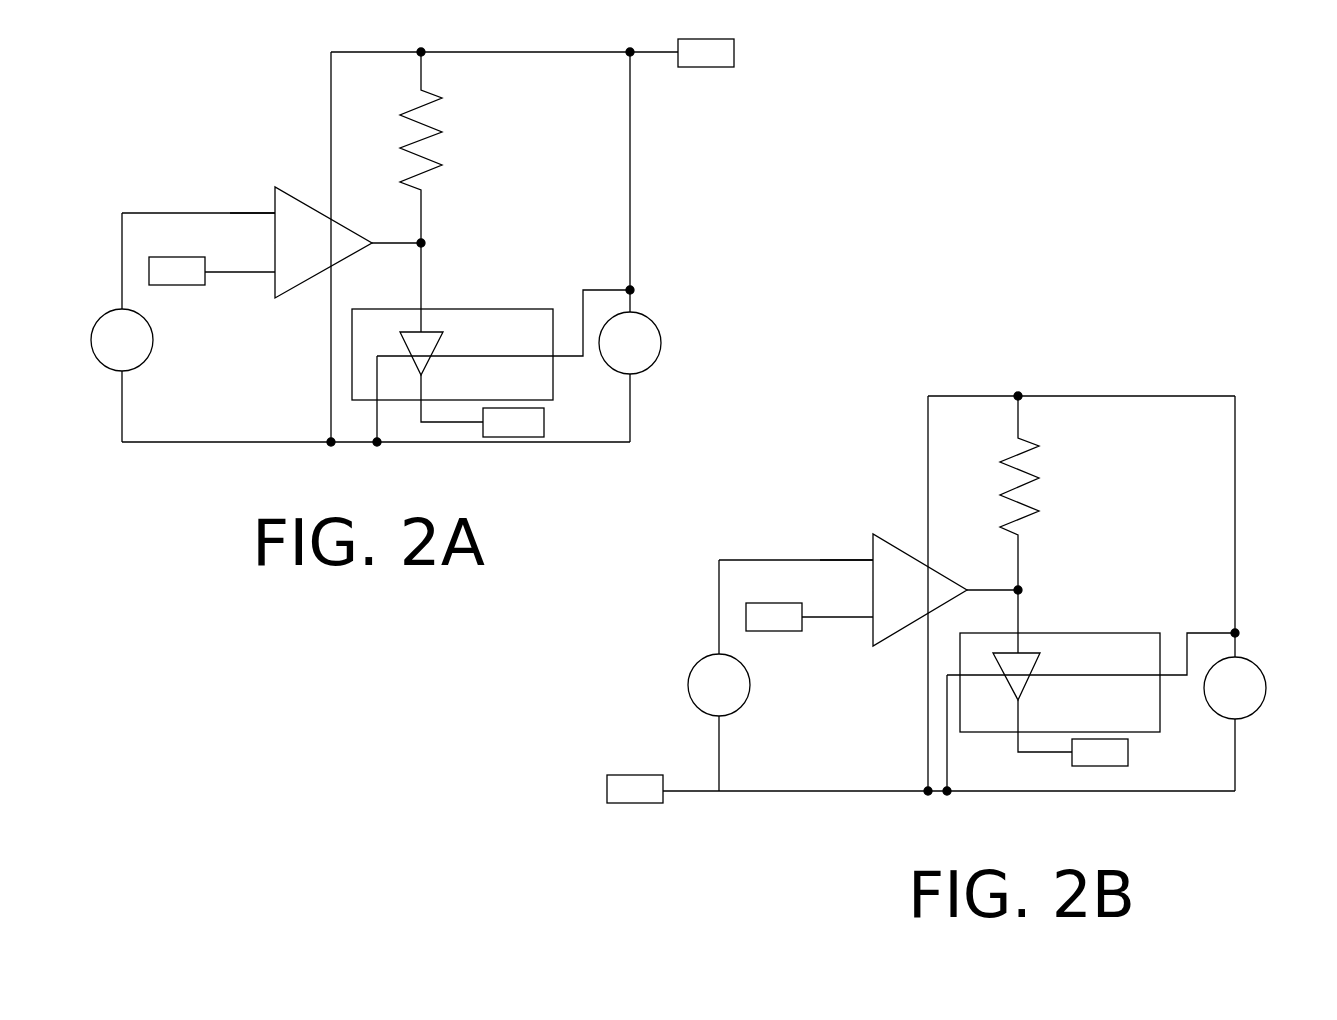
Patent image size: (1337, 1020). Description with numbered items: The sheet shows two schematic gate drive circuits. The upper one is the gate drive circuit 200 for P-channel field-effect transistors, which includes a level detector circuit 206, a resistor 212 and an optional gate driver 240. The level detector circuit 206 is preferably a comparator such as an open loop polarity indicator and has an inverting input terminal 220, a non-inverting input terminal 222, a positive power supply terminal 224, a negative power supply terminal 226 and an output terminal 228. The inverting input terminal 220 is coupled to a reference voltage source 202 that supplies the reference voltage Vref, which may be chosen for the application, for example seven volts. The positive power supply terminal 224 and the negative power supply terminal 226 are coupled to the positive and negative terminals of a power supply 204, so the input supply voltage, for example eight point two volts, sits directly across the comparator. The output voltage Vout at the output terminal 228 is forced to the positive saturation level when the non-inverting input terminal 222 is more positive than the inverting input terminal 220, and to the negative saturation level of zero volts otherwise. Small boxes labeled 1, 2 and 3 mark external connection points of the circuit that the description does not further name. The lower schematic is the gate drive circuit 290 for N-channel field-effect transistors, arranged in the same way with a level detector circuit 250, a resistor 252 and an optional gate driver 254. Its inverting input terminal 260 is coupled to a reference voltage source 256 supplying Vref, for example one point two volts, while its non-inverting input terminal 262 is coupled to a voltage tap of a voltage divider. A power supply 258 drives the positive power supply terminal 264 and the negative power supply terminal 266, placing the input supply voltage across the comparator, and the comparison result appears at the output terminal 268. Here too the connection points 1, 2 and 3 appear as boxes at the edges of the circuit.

In FIG. 2A, the terminal 1 is at (563, 435).
In FIG. 2B, the terminal 1 is at (1125, 752).
In FIG. 2A, the terminal 2 is at (758, 63).
In FIG. 2B, the terminal 2 is at (596, 801).
In FIG. 2A, the terminal 3 is at (184, 253).
In FIG. 2B, the terminal 3 is at (781, 600).
In FIG. 2A, the gate drive circuit 200 is at (279, 105).
In FIG. 2A, the reference voltage source 202 is at (200, 350).
In FIG. 2A, the power supply 204 is at (703, 335).
In FIG. 2A, the level detector circuit 206 is at (336, 260).
In FIG. 2A, the resistor 212 is at (486, 146).
In FIG. 2A, the inverting input terminal 220 is at (266, 191).
In FIG. 2A, the non-inverting input terminal 222 is at (269, 281).
In FIG. 2A, the positive power supply terminal 224 is at (307, 186).
In FIG. 2A, the negative power supply terminal 226 is at (405, 300).
In FIG. 2A, the output terminal 228 is at (371, 232).
In FIG. 2A, the gate driver 240 is at (437, 306).
In FIG. 2B, the level detector circuit 250 is at (929, 603).
In FIG. 2B, the resistor 252 is at (1080, 503).
In FIG. 2B, the gate driver 254 is at (1048, 631).
In FIG. 2B, the reference voltage source 256 is at (685, 698).
In FIG. 2B, the power supply 258 is at (1296, 663).
In FIG. 2B, the inverting input terminal 260 is at (845, 526).
In FIG. 2B, the non-inverting input terminal 262 is at (861, 636).
In FIG. 2B, the positive power supply terminal 264 is at (905, 536).
In FIG. 2B, the negative power supply terminal 266 is at (906, 637).
In FIG. 2B, the output terminal 268 is at (977, 574).
In FIG. 2B, the gate drive circuit 290 is at (846, 470).